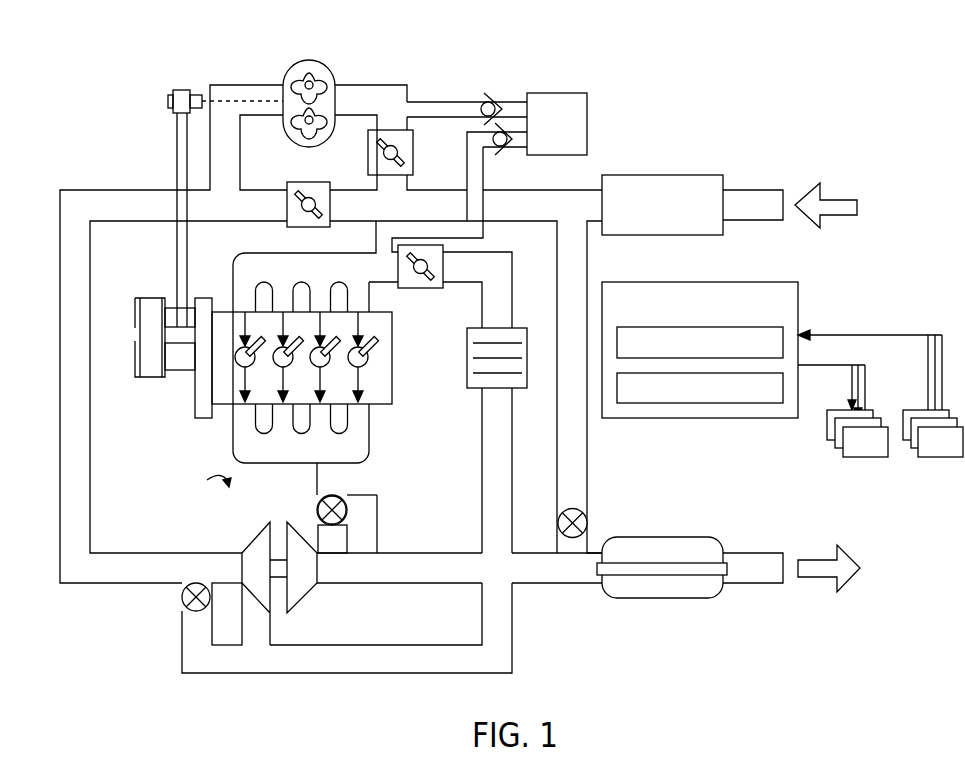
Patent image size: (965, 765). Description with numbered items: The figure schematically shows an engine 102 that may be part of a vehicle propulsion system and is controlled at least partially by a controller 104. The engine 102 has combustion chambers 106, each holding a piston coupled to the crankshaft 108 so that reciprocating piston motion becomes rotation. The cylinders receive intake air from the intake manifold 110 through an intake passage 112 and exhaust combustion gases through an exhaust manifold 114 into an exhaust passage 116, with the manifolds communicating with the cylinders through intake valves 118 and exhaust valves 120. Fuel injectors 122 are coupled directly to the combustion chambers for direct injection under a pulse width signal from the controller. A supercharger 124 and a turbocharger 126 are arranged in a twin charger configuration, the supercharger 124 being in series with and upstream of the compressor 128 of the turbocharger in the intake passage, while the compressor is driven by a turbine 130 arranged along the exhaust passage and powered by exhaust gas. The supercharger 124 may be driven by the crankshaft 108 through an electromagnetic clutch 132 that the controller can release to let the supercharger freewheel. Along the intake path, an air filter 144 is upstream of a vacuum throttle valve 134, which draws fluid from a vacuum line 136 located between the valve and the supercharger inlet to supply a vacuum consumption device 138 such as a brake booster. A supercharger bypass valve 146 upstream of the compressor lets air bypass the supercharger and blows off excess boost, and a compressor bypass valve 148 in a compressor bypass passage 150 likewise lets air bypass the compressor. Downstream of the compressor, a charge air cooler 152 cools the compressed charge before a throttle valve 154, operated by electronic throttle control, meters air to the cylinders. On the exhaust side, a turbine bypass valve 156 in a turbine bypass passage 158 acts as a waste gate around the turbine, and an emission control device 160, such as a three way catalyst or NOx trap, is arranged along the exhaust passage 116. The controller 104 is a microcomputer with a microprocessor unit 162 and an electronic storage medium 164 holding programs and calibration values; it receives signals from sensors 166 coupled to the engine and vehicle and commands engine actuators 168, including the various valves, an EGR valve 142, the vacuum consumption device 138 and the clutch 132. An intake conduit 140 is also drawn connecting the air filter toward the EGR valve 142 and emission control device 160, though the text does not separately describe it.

The engine 102 is at (328, 356).
The controller 104 is at (772, 312).
The combustion chambers 106 is at (370, 362).
The crankshaft 108 is at (182, 372).
The intake manifold 110 is at (288, 277).
The intake passage 112 is at (750, 190).
The exhaust manifold 114 is at (289, 455).
The exhaust passage 116 is at (756, 585).
The intake valves 118 is at (378, 328).
The exhaust valves 120 is at (372, 382).
The fuel injectors 122 is at (380, 353).
The supercharger 124 is at (304, 60).
The turbocharger 126 is at (202, 480).
The compressor 128 is at (254, 540).
The turbine 130 is at (304, 597).
The electromagnetic clutch 132 is at (175, 298).
The vacuum throttle valve 134 is at (416, 160).
The vacuum line 136 is at (473, 98).
The vacuum consumption device 138 is at (571, 93).
The intake conduit 140 is at (588, 464).
The EGR valve 142 is at (588, 516).
The air filter 144 is at (676, 175).
The supercharger bypass valve 146 is at (305, 182).
The compressor bypass valve 148 is at (182, 596).
The compressor bypass passage 150 is at (182, 641).
The charge air cooler 152 is at (477, 389).
The throttle valve 154 is at (434, 289).
The turbine bypass valve 156 is at (338, 495).
The turbine bypass passage 158 is at (378, 522).
The emission control device 160 is at (678, 537).
The microprocessor unit 162 is at (767, 350).
The electronic storage medium 164 is at (736, 396).
The sensors 166 is at (880, 393).
The engine actuators 168 is at (843, 411).